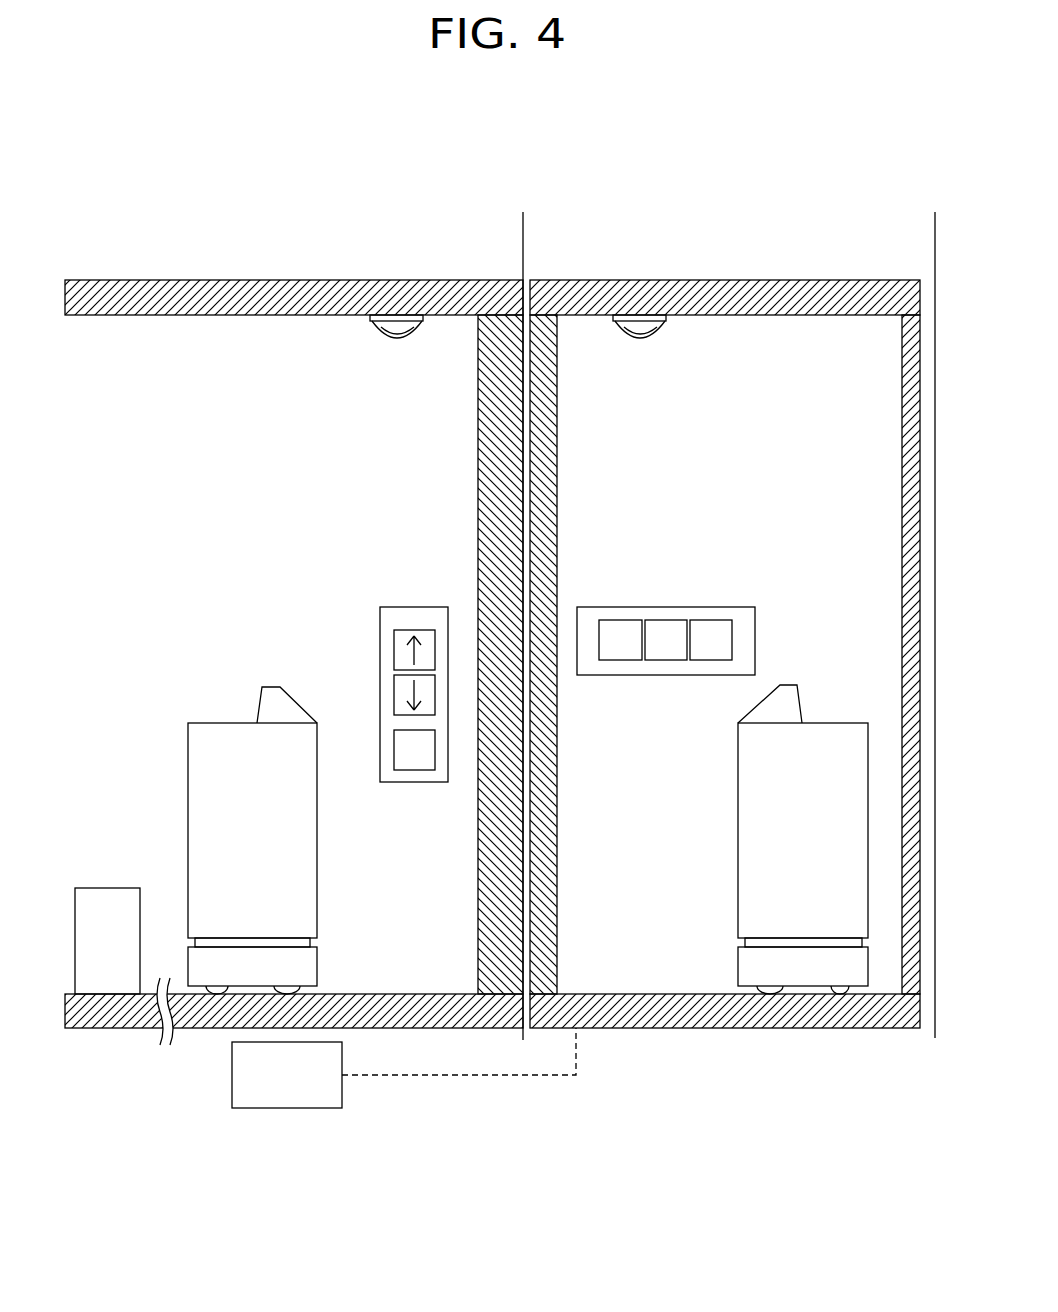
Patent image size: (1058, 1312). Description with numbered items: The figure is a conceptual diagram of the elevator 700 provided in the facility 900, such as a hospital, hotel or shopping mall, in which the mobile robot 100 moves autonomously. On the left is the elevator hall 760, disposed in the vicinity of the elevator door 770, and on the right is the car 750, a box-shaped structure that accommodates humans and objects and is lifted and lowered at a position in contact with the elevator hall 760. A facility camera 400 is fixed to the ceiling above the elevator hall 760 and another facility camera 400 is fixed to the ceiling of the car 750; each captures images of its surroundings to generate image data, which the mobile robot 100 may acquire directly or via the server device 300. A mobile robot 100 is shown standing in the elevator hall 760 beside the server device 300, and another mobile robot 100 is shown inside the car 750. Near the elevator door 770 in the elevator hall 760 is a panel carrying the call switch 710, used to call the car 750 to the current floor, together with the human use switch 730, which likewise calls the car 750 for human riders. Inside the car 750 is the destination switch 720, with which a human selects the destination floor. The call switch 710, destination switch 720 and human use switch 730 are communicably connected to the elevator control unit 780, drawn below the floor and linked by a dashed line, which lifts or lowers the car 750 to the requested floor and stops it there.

The facility 900 is at (354, 208).
The elevator 700 is at (692, 247).
The elevator hall 760 is at (268, 438).
The car 750 is at (780, 437).
The elevator door 770 is at (478, 418).
The call switch 710 is at (407, 630).
The human use switch 730 is at (410, 770).
The destination switch 720 is at (655, 607).
The facility camera 400 is at (417, 331).
The mobile robot 100 is at (215, 723).
The server device 300 is at (122, 888).
The elevator control unit 780 is at (232, 1075).